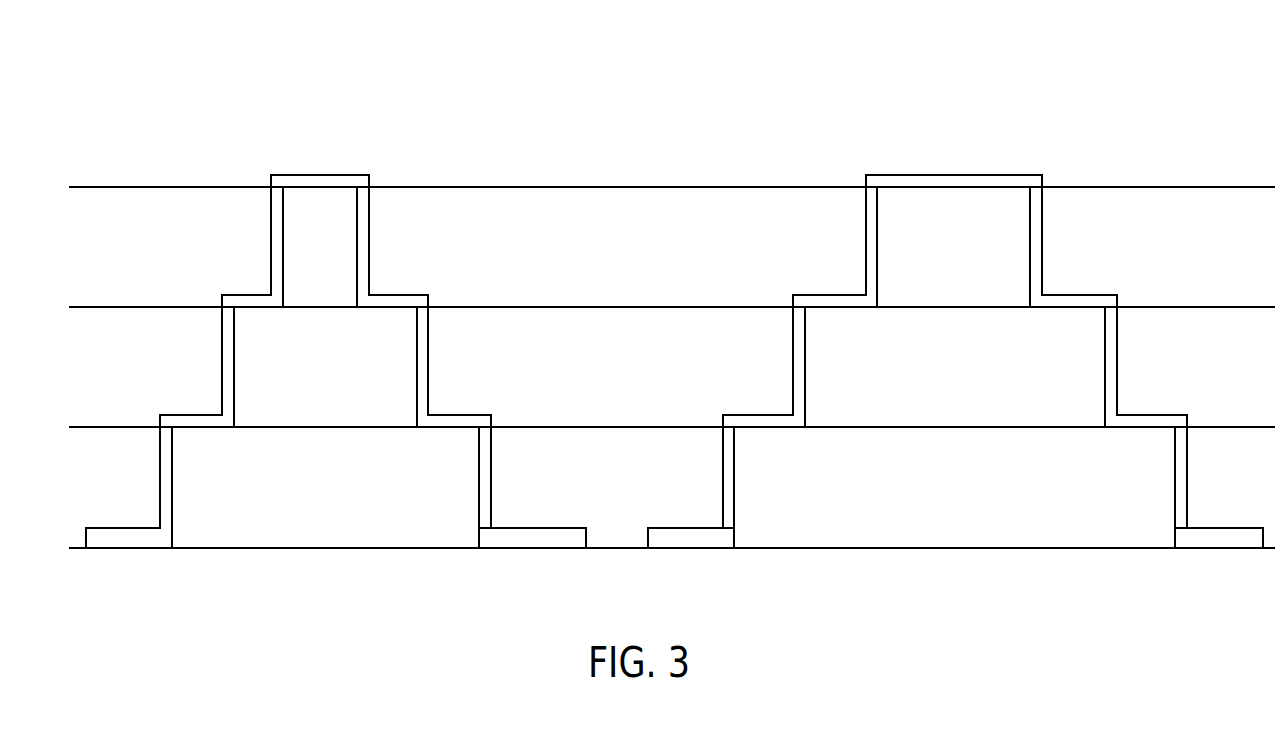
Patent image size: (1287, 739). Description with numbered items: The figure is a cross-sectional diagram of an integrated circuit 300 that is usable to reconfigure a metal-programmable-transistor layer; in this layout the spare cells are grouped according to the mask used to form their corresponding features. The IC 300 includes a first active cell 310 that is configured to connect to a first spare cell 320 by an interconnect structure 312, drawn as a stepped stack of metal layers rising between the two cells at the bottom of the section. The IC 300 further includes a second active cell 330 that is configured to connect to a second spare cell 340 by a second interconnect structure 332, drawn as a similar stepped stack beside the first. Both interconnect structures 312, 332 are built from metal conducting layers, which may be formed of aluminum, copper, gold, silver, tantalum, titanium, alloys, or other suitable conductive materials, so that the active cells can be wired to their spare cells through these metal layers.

The integrated circuit 300 is at (672, 316).
The first active cell 310 is at (135, 537).
The interconnect structure 312 is at (586, 525).
The first spare cell 320 is at (530, 538).
The second active cell 330 is at (692, 538).
The interconnect structure 332 is at (697, 175).
The second spare cell 340 is at (1218, 538).